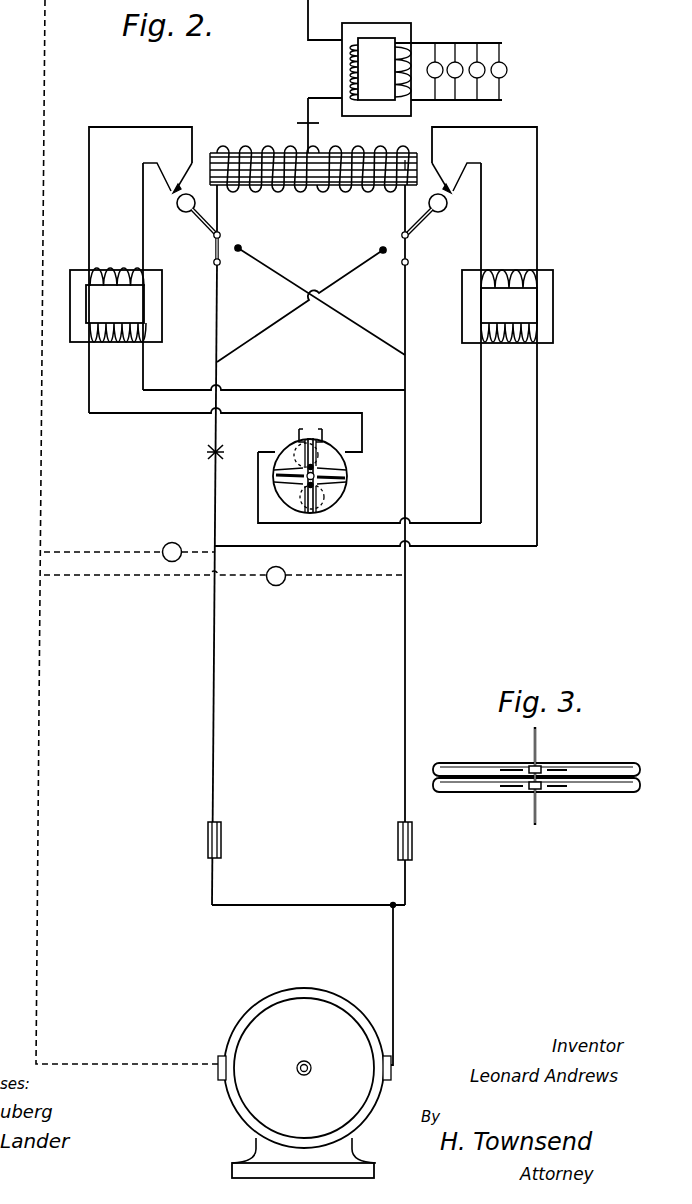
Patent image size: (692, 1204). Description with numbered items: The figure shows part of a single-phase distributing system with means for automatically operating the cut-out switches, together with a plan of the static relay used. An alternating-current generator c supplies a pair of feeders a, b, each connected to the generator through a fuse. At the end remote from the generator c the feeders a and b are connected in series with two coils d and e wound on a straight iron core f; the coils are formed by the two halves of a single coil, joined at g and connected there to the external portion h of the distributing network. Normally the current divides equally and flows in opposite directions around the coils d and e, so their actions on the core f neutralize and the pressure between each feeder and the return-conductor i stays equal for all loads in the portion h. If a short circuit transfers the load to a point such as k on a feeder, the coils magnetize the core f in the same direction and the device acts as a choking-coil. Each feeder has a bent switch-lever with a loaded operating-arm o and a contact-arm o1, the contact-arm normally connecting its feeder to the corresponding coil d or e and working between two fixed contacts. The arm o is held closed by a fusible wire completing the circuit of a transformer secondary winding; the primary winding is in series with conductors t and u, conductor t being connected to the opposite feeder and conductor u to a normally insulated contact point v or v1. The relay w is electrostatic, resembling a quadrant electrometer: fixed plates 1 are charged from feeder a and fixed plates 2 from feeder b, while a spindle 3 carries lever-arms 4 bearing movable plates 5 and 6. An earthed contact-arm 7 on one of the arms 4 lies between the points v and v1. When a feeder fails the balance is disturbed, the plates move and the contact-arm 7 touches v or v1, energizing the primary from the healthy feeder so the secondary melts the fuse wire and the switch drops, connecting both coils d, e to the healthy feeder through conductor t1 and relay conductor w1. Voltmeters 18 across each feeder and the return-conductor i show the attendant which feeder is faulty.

In FIG. 2, the external portion of the distributing network h is at (432, 69).
In FIG. 2, the connection point of the coils g is at (305, 122).
In FIG. 2, the iron core f is at (406, 162).
In FIG. 2, the coil d is at (264, 189).
In FIG. 2, the coil e is at (364, 189).
In FIG. 2, the operating-arm o is at (200, 222).
In FIG. 2, the contact-arm o1 is at (216, 250).
In FIG. 2, the conductor t is at (274, 381).
In FIG. 2, the conductor t1 is at (373, 548).
In FIG. 2, the conductor u is at (268, 413).
In FIG. 2, the point on feeder k is at (207, 453).
In FIG. 2, the return-conductor i is at (40, 507).
In FIG. 2, the relay w is at (348, 463).
In FIG. 2, the relay conductor w1 is at (383, 518).
In FIG. 2, the contact point v is at (324, 431).
In FIG. 2, the contact point v1 is at (302, 428).
In FIG. 2, the contact-arm 7 is at (317, 430).
In FIG. 2, the movable plates 5 is at (333, 456).
In FIG. 3, the movable plates 5 is at (548, 789).
In FIG. 2, the movable plates 6 is at (328, 503).
In FIG. 2, the spindle 3 is at (278, 476).
In FIG. 3, the spindle 3 is at (539, 751).
In FIG. 2, the lever-arms 4 is at (346, 479).
In FIG. 2, the fixed plates 1 is at (309, 479).
In FIG. 3, the fixed plates 1 is at (447, 788).
In FIG. 2, the fixed plates 2 is at (309, 479).
In FIG. 3, the fixed plates 2 is at (601, 792).
In FIG. 2, the voltmeter 18 is at (176, 536).
In FIG. 2, the feeder a is at (215, 688).
In FIG. 2, the feeder b is at (403, 662).
In FIG. 2, the alternating-current generator c is at (304, 1083).